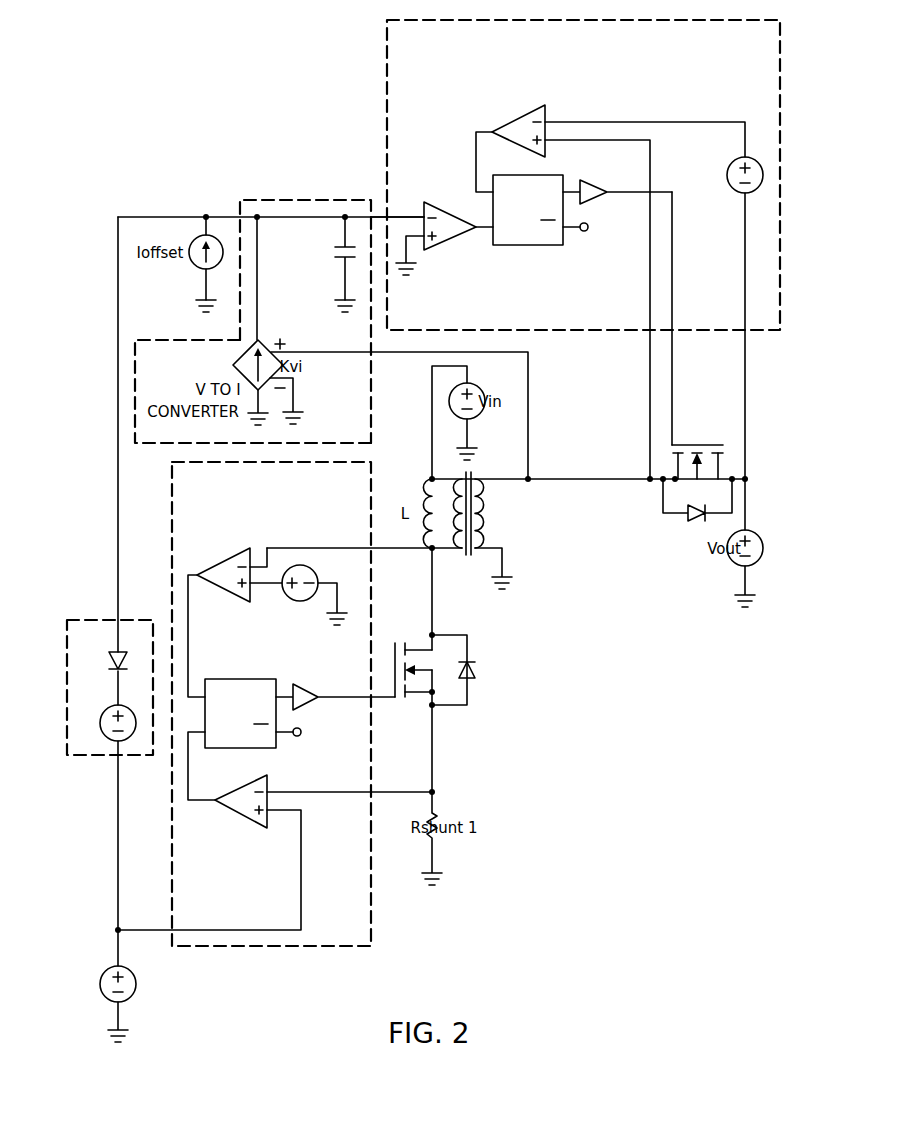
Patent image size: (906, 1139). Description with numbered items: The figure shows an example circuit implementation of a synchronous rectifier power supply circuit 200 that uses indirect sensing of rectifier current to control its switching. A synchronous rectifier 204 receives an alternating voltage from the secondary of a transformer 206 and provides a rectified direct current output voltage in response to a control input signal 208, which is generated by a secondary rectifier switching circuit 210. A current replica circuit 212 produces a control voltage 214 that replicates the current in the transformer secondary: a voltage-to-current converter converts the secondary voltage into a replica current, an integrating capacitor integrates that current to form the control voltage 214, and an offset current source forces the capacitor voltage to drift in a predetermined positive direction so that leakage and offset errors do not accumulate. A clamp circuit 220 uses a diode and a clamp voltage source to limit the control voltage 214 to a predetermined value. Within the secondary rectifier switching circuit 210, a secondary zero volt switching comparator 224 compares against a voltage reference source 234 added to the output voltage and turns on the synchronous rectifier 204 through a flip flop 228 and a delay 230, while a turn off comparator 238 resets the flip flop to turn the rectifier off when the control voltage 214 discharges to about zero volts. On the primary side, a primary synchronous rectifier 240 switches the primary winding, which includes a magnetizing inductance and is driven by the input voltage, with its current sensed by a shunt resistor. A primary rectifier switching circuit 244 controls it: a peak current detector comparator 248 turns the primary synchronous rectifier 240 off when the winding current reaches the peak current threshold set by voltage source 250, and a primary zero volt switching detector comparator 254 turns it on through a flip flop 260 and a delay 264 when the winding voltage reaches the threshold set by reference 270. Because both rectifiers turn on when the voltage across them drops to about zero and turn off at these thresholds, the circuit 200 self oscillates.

The synchronous rectifier power supply circuit 200 is at (166, 50).
The synchronous rectifier 204 is at (712, 441).
The transformer 206 is at (469, 566).
The control input signal 208 is at (674, 262).
The secondary rectifier switching circuit 210 is at (588, 340).
The current replica circuit 212 is at (281, 195).
The control voltage 214 is at (405, 216).
The clamp circuit 220 is at (88, 762).
The secondary zero volt switching comparator 224 is at (520, 118).
The flip flop 228 is at (537, 245).
The delay 230 is at (594, 198).
The voltage reference source 234 is at (727, 174).
The turn off comparator 238 is at (452, 245).
The primary synchronous rectifier 240 is at (420, 697).
The primary rectifier switching circuit 244 is at (258, 956).
The peak current detector comparator 248 is at (247, 824).
The voltage source 250 is at (137, 986).
The primary zero volt switching detector comparator 254 is at (222, 561).
The flip flop 260 is at (241, 678).
The delay 264 is at (308, 706).
The reference 270 is at (300, 602).